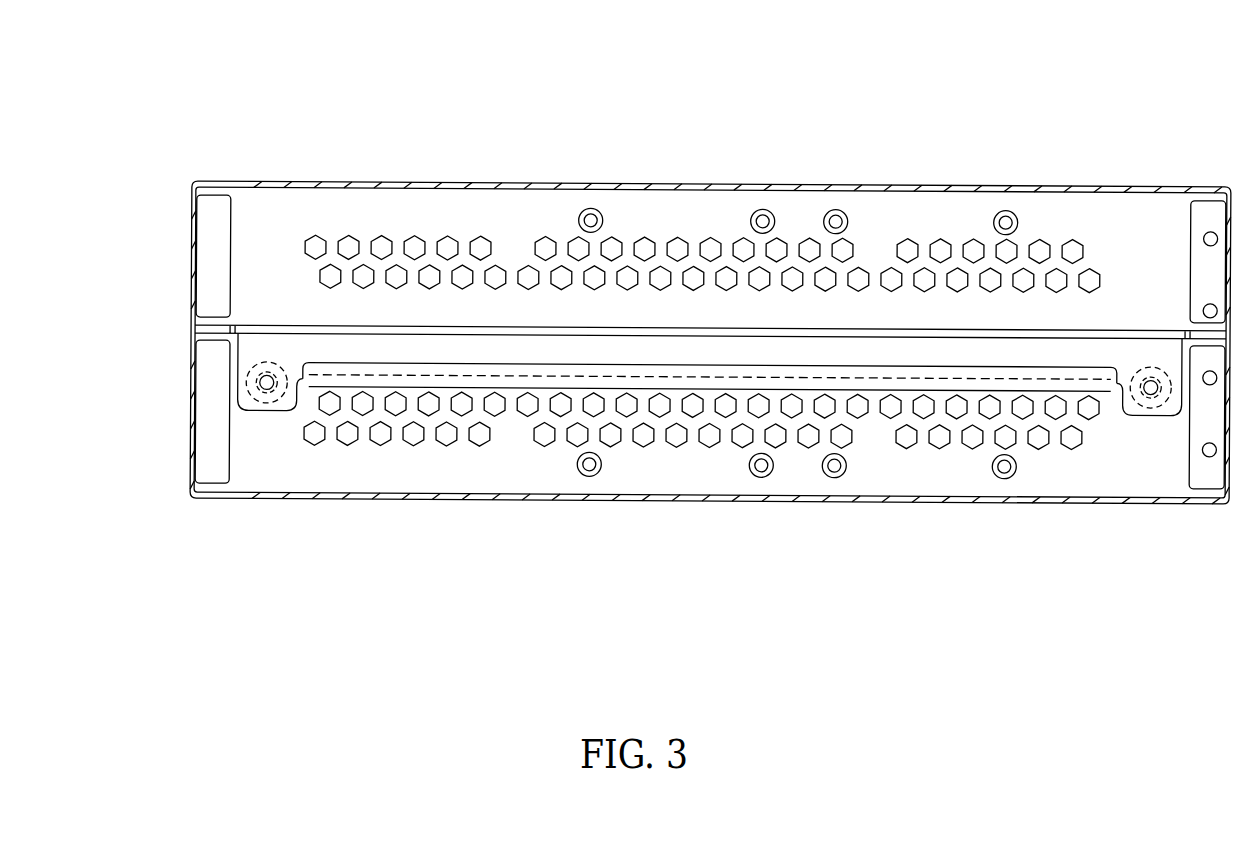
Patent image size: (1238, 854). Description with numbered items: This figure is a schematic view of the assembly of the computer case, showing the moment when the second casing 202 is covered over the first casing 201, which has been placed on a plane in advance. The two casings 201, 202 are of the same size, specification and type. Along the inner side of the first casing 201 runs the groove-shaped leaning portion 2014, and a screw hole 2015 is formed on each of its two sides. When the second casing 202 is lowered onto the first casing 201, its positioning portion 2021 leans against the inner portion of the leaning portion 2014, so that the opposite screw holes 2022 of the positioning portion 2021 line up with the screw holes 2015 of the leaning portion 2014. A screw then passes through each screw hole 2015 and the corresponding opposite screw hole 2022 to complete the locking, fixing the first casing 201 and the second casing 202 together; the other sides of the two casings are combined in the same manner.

The first casing 201 is at (284, 478).
The second casing 202 is at (272, 211).
The leaning portion 2014 is at (1066, 383).
The screw hole 2015 is at (262, 381).
The positioning portion 2021 is at (1078, 350).
The opposite screw hole 2022 is at (247, 388).